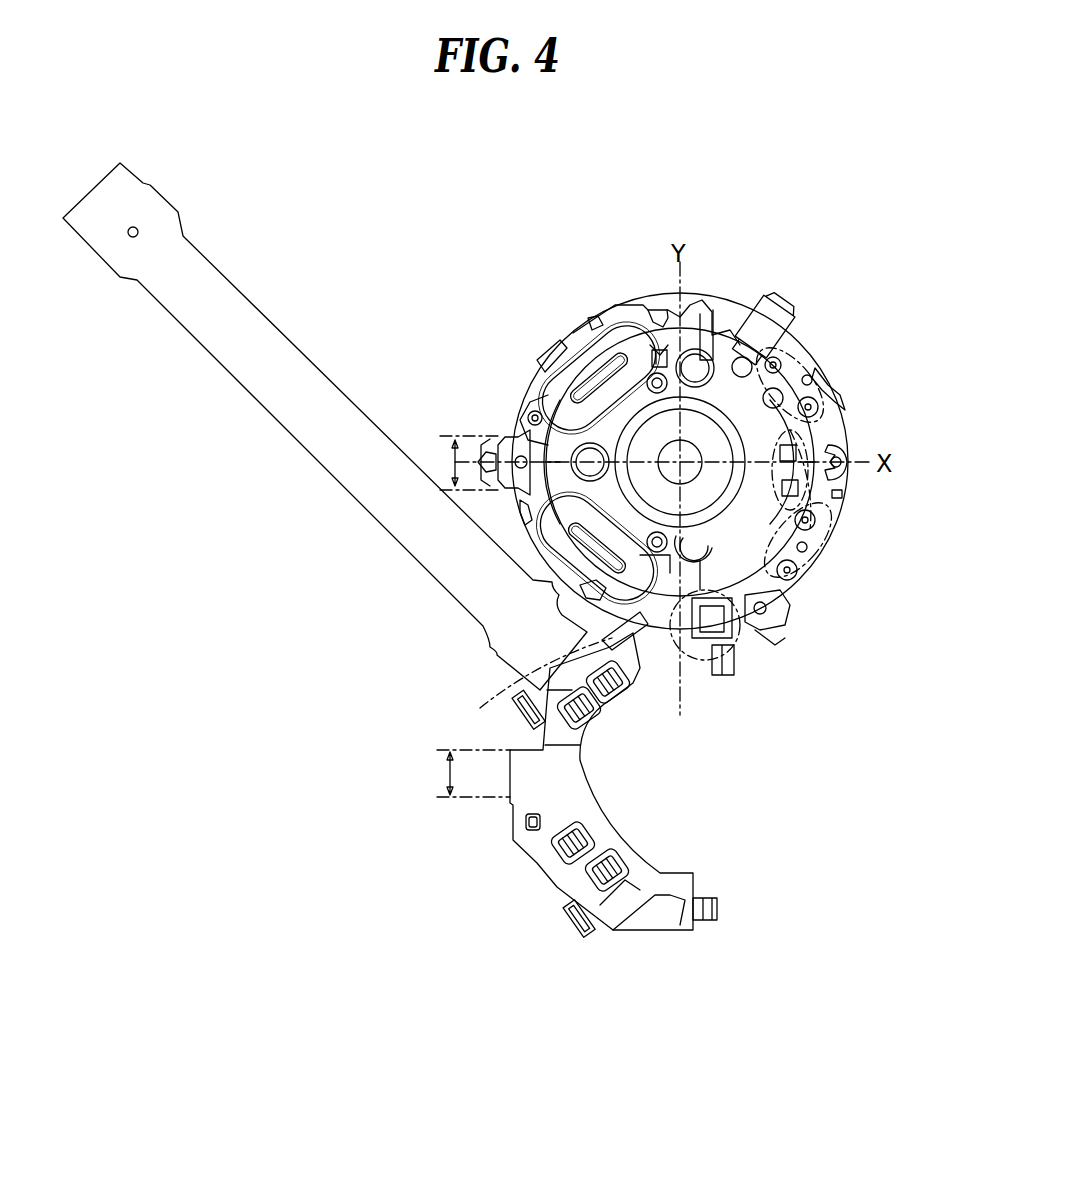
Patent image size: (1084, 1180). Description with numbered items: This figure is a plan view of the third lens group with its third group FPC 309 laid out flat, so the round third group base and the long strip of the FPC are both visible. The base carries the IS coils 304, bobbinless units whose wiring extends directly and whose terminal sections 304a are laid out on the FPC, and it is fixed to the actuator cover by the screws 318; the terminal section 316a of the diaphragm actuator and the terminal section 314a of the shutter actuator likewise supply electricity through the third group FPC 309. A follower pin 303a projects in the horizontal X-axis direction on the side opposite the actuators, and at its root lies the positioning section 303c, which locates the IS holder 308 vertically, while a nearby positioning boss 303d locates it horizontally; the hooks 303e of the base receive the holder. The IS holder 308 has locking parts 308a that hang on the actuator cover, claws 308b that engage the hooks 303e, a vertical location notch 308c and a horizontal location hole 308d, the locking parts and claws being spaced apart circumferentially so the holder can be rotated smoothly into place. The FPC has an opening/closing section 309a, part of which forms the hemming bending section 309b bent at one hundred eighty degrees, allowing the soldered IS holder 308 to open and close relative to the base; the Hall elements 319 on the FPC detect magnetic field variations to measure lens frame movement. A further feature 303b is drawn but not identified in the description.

The follower pin 303a is at (778, 300).
The positioning portion 303b is at (660, 320).
The positioning section 303c is at (480, 438).
The positioning boss 303d is at (530, 410).
The hook 303e is at (595, 323).
The IS coil 304 is at (585, 367).
The terminal section of IS coil 304a is at (722, 330).
The IS holder 308 is at (655, 935).
The locking part 308a is at (720, 912).
The claw 308b is at (525, 708).
The vertical location notch 308c is at (437, 780).
The horizontal location hole 308d is at (533, 822).
The third group FPC 309 is at (245, 380).
The opening/closing section 309a is at (480, 688).
The hemming bending section 309b is at (740, 625).
The terminal section of shutter actuator 314a is at (820, 550).
The terminal section of diaphragm actuator 316a is at (822, 382).
The screw 318 is at (835, 450).
The Hall element 319 is at (613, 680).